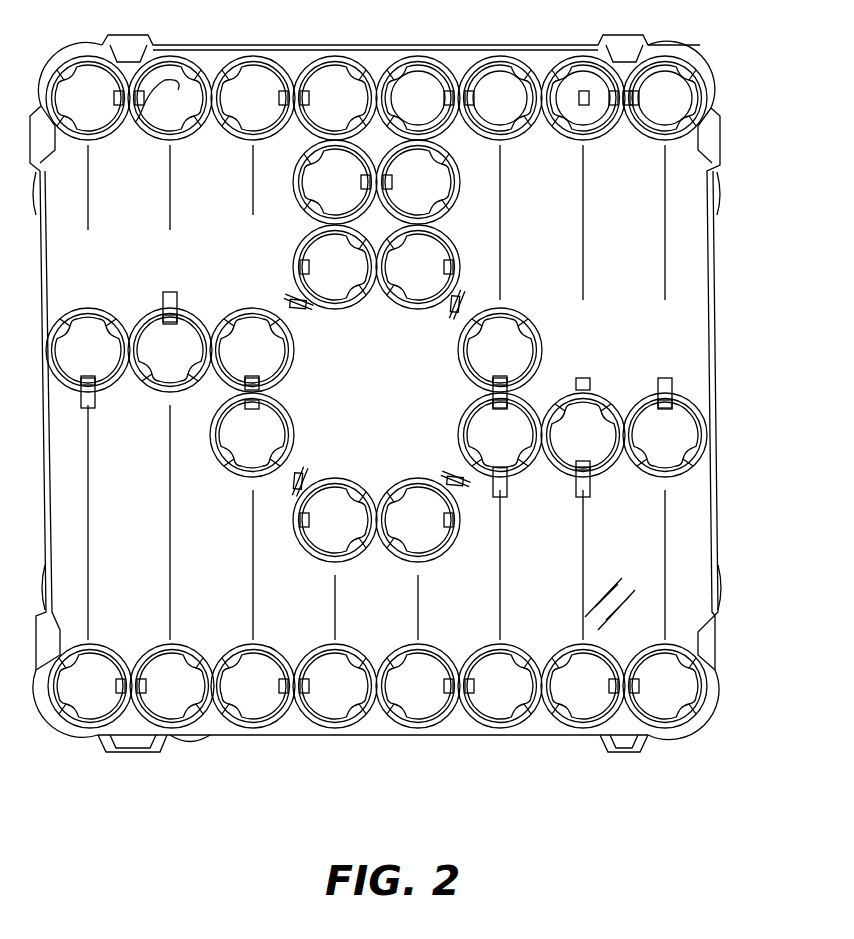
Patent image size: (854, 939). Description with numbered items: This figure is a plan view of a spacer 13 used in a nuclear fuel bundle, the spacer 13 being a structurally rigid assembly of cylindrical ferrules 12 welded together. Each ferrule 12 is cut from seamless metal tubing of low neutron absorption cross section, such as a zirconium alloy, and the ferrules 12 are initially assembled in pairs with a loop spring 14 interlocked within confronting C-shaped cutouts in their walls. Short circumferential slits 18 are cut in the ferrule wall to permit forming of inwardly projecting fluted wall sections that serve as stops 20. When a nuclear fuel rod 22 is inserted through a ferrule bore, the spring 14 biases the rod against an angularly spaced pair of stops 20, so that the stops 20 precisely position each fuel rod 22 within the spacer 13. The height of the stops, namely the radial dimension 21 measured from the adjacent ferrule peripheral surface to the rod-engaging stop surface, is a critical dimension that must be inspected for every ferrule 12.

The ferrule 12 is at (632, 140).
The spacer 13 is at (740, 418).
The loop spring 14 is at (622, 100).
The circumferential slits 18 is at (525, 338).
The stops 20 is at (155, 80).
The radial dimension 21 is at (632, 607).
The nuclear fuel rods 22 is at (575, 88).